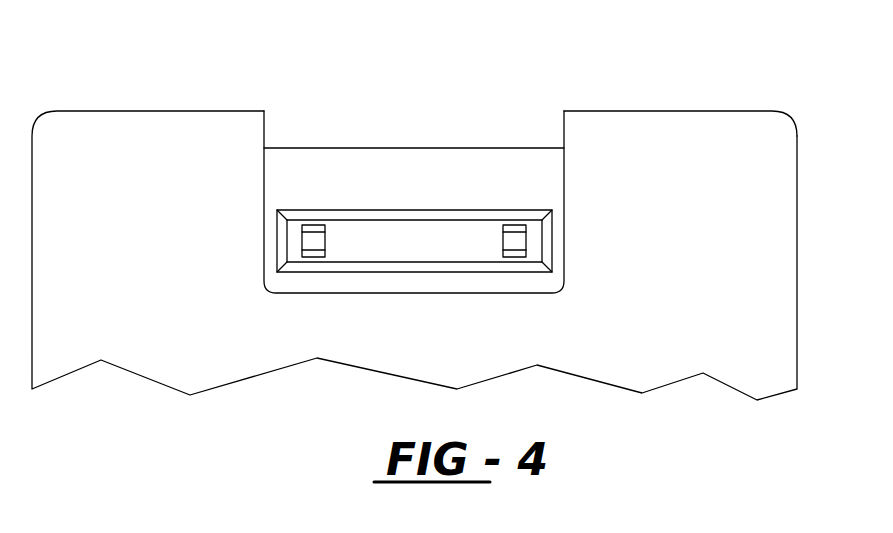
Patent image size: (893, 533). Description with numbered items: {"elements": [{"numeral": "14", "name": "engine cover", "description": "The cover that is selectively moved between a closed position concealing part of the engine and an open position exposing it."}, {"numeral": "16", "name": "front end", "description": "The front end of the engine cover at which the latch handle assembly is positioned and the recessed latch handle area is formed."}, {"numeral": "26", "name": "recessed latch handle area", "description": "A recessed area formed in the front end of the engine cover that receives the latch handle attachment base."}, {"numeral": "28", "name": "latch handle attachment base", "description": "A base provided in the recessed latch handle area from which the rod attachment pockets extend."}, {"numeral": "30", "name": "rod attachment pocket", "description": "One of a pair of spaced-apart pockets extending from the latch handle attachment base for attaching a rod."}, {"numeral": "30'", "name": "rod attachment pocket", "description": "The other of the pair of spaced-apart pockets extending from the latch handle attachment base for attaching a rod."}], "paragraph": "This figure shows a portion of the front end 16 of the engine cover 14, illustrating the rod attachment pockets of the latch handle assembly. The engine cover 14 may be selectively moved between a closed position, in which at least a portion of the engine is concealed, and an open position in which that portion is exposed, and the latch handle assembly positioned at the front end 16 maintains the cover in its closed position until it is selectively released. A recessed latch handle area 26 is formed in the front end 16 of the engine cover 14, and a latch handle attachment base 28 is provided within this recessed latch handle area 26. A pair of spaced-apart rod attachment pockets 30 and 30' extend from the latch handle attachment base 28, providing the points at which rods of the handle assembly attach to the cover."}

The body 14 is at (768, 283).
The upper portion 16 is at (675, 138).
The recess 26 is at (292, 162).
The frame insert 28 is at (422, 235).
The fastener 30 is at (331, 154).
The fastener 30' is at (499, 149).